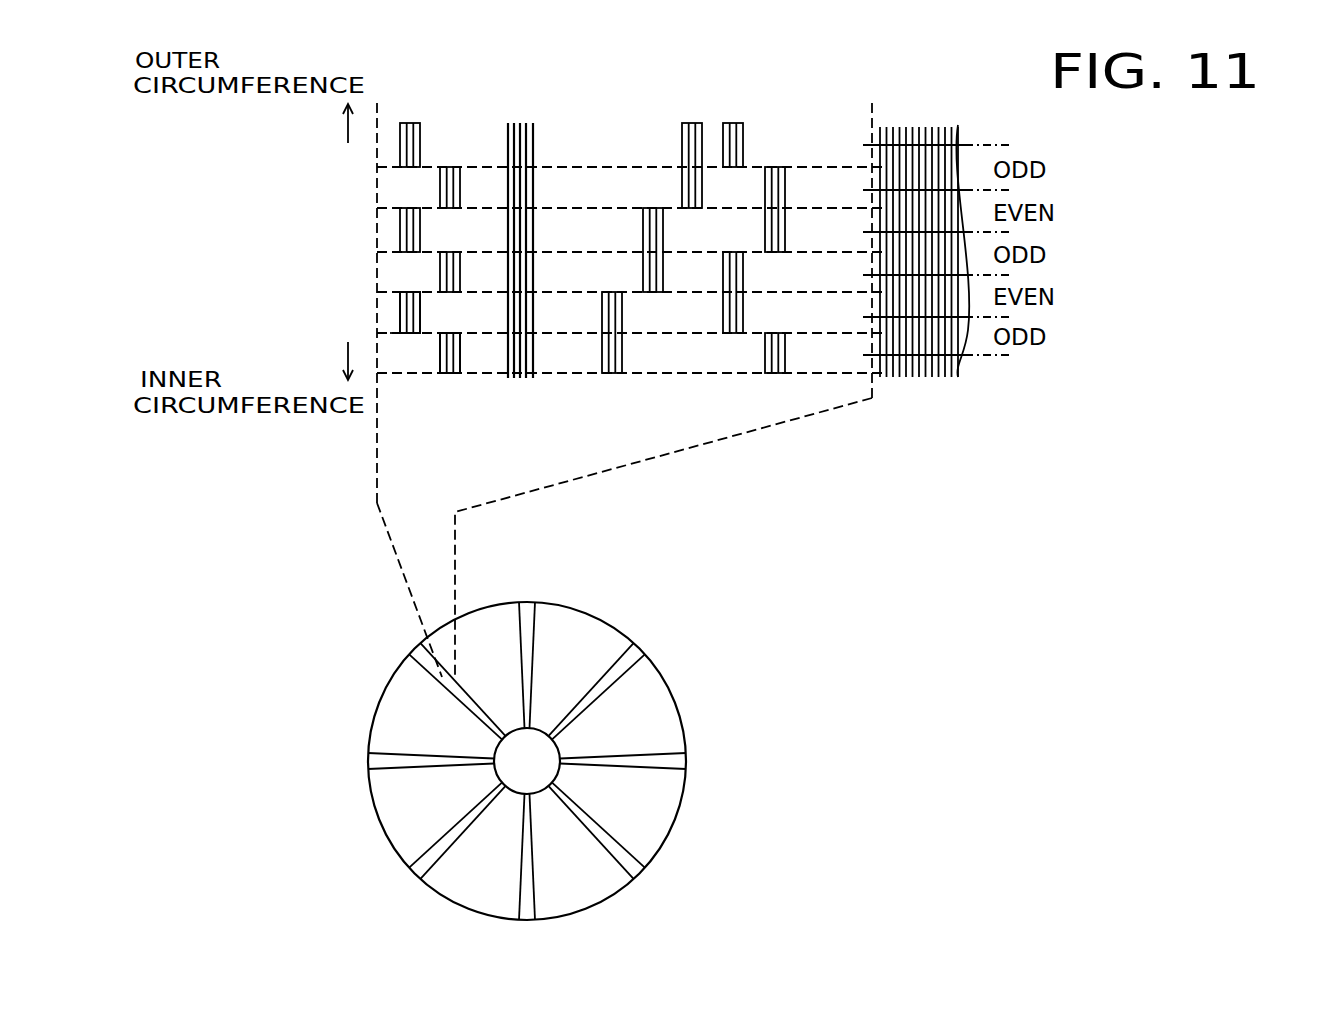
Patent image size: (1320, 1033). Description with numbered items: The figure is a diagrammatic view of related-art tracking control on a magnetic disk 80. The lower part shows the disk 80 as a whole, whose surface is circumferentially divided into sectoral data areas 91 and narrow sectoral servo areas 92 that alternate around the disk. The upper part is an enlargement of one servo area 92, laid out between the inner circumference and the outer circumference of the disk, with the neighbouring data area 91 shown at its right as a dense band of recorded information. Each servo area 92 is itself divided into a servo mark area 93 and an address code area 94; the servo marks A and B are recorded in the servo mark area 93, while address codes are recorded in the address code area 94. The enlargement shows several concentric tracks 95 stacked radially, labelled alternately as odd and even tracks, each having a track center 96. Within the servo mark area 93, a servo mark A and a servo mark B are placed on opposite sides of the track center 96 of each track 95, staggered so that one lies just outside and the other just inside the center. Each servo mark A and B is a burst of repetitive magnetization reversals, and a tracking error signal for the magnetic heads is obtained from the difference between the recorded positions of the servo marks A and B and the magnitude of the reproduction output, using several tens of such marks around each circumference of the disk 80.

The magnetic disk 80 is at (678, 693).
The data area 91 is at (872, 103).
The servo area 92 is at (872, 103).
The servo mark area 93 is at (503, 378).
The address code area 94 is at (865, 378).
The track 95 is at (375, 345).
The track center 96 is at (393, 342).
The servo mark A is at (420, 313).
The servo mark B is at (460, 355).